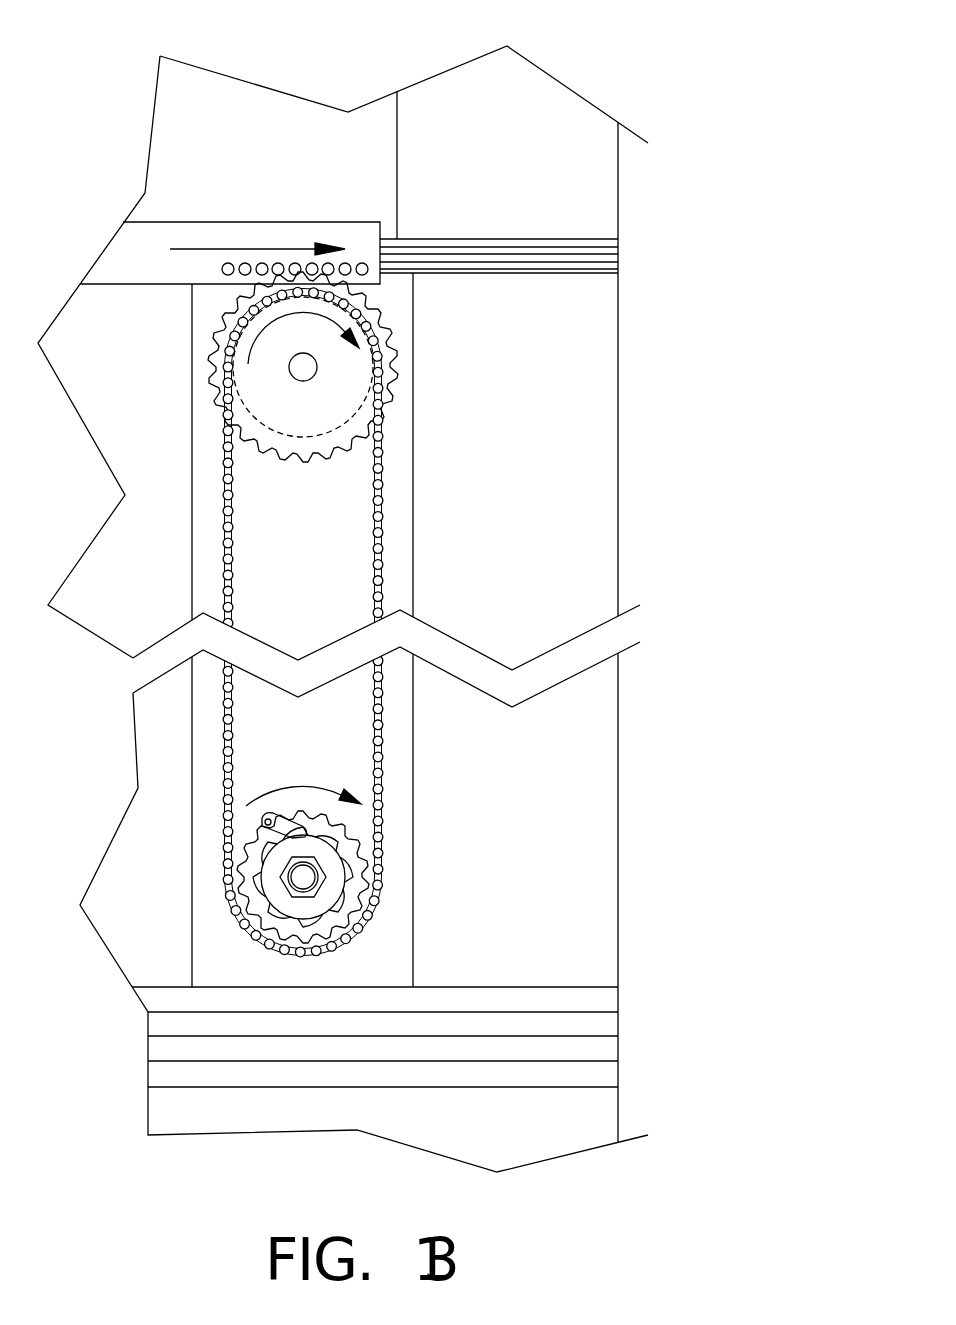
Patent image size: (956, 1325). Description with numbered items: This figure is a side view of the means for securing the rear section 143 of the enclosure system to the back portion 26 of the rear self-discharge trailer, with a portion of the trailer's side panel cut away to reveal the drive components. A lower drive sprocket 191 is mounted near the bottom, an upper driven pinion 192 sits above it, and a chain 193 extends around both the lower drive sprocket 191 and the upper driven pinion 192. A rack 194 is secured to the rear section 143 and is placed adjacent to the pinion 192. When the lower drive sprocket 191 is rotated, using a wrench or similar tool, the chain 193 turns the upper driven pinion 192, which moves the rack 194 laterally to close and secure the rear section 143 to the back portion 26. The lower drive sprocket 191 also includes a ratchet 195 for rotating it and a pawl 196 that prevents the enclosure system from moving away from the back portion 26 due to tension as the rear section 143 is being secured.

The rear section 143 is at (378, 132).
The rack 194 is at (347, 263).
The upper driven pinion 192 is at (342, 378).
The back portion 26 is at (560, 447).
The chain 193 is at (380, 522).
The lower drive sprocket 191 is at (363, 888).
The ratchet 195 is at (280, 883).
The pawl 196 is at (280, 810).